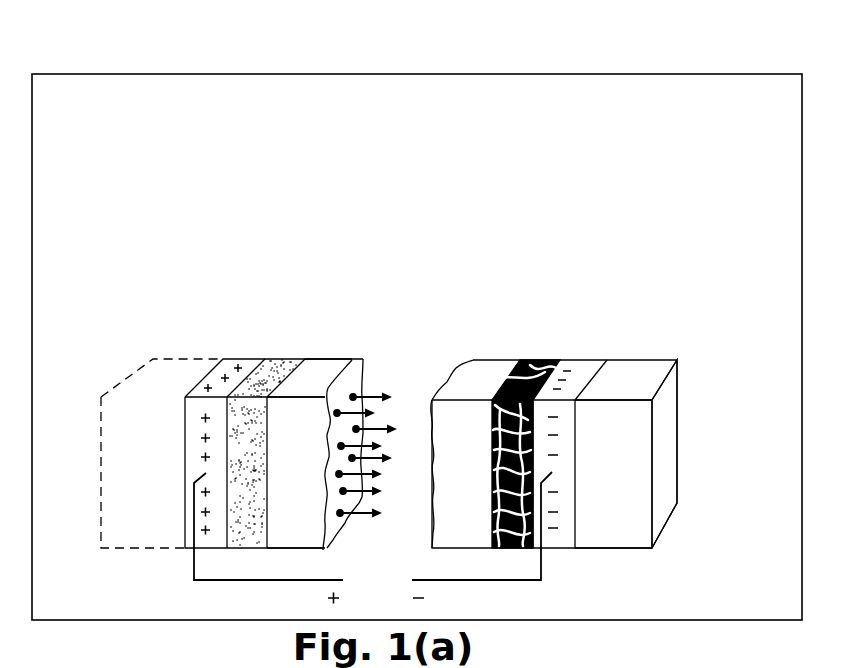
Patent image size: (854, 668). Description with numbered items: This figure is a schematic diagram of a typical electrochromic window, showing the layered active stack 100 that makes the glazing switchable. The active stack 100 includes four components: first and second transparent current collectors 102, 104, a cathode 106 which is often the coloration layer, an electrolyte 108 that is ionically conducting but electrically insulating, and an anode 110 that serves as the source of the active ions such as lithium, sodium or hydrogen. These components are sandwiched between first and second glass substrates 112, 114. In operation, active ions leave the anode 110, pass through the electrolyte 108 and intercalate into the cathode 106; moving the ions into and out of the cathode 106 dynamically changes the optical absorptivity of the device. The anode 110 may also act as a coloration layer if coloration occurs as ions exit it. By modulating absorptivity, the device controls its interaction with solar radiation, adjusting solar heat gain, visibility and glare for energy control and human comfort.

The active stack 100 is at (227, 60).
The first transparent current collector 102 is at (611, 369).
The second transparent current collector 104 is at (441, 319).
The cathode 106 is at (661, 363).
The electrolyte 108 is at (537, 341).
The anode 110 is at (342, 363).
The first glass substrate 112 is at (656, 403).
The second glass substrate 114 is at (231, 400).